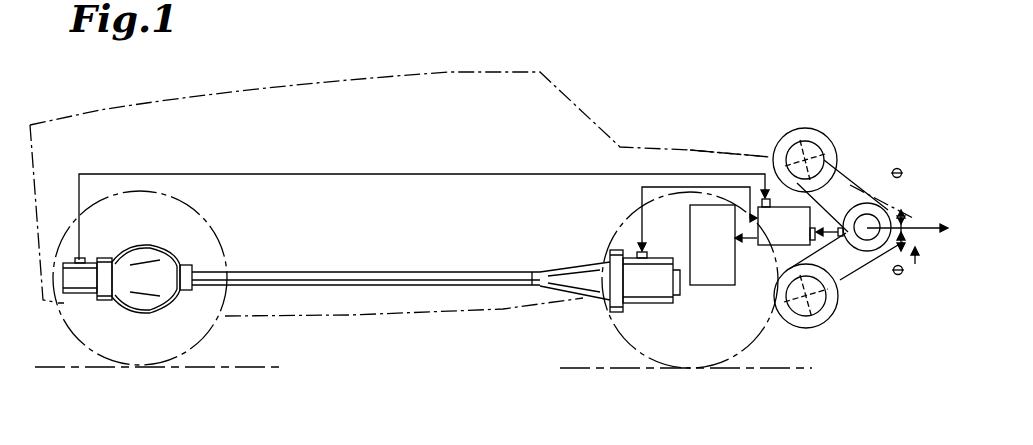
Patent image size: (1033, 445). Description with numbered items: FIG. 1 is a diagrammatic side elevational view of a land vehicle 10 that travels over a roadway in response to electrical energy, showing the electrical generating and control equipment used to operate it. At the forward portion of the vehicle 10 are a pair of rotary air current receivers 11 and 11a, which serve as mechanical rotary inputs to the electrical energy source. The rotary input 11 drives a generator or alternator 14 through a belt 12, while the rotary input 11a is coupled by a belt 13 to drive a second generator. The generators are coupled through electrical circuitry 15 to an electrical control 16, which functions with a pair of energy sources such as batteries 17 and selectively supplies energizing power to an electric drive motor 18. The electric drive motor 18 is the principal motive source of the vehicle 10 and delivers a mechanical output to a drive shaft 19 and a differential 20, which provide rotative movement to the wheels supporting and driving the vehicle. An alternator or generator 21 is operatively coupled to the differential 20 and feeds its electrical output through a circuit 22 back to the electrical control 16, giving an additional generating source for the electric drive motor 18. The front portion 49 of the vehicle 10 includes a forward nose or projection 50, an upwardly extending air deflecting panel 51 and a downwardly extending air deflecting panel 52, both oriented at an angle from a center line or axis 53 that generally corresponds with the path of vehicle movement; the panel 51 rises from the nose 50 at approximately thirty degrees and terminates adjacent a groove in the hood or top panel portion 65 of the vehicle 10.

The land vehicle 10 is at (466, 72).
The hood or top panel portion 65 is at (725, 151).
The rotary air current receiver 11 is at (818, 112).
The rotary air current receiver 11a is at (805, 327).
The belt 12 is at (851, 171).
The belt 13 is at (848, 283).
The generator or alternator 14 is at (878, 252).
The electrical circuitry 15 is at (824, 238).
The electrical control 16 is at (793, 230).
The batteries 17 is at (722, 248).
The electric drive motor 18 is at (655, 288).
The drive shaft 19 is at (388, 272).
The differential 20 is at (160, 294).
The alternator or generator 21 is at (85, 282).
The circuit 22 is at (415, 173).
The front portion 49 is at (915, 266).
The forward nose or projection 50 is at (912, 238).
The upwardly extending air deflecting panel 51 is at (900, 207).
The downwardly extending air deflecting panel 52 is at (899, 276).
The center line or axis 53 is at (932, 226).